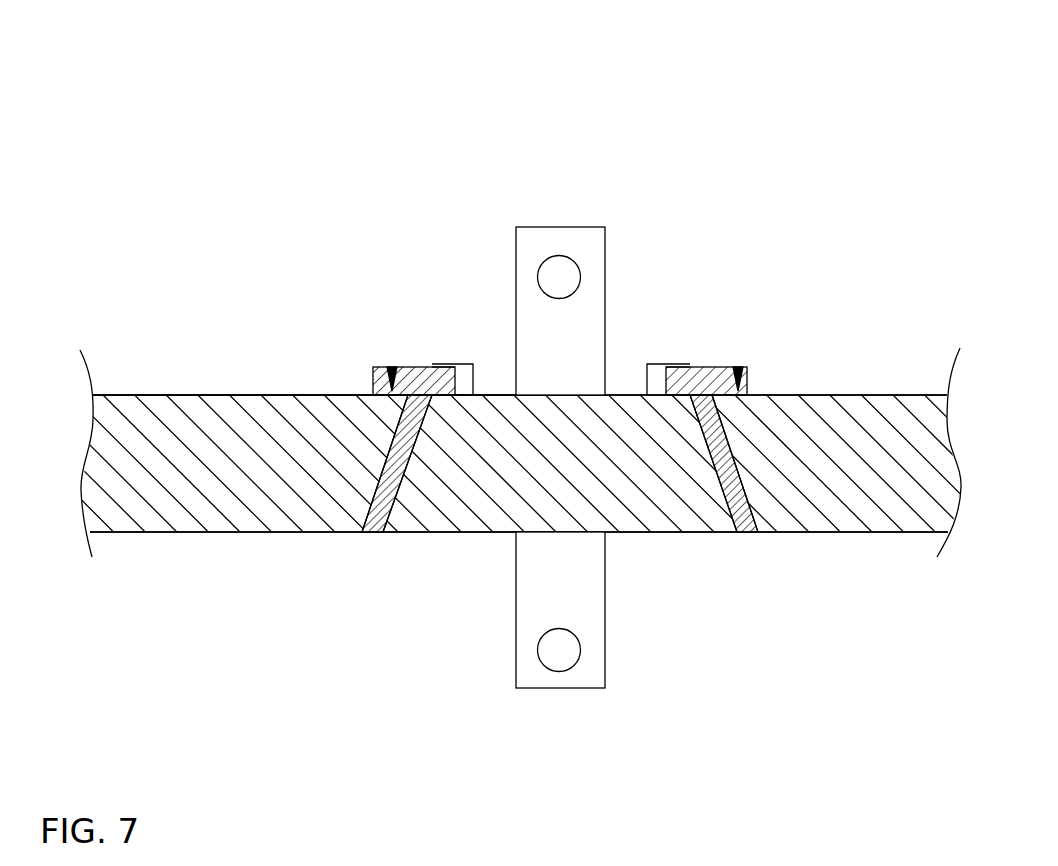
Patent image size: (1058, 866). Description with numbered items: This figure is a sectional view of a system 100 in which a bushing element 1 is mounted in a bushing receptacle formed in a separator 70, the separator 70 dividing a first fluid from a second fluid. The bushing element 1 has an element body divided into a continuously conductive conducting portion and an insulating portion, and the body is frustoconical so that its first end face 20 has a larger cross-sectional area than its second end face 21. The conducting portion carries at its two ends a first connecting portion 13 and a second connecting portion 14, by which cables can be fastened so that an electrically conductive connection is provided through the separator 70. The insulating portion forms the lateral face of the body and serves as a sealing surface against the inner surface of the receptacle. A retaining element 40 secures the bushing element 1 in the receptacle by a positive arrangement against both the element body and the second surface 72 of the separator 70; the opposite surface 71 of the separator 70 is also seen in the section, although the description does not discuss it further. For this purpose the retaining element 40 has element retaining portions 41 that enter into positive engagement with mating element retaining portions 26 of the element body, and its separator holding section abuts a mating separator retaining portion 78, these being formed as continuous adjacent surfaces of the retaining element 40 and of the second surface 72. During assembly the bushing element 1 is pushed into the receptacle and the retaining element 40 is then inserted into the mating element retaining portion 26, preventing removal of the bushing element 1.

The system 100 is at (148, 86).
The bushing element 1 is at (390, 703).
The first connecting portion 13 is at (584, 678).
The second connecting portion 14 is at (585, 240).
The first end face 20 is at (478, 533).
The second end face 21 is at (497, 395).
The mating element retaining portion 26 is at (458, 364).
The retaining element 40 is at (718, 366).
The element retaining portion 41 is at (435, 350).
The mating separator retaining portion 78 is at (583, 348).
The separator 70 is at (155, 520).
The lower surface of substrate 71 is at (225, 532).
The second surface of the separator 72 is at (225, 395).